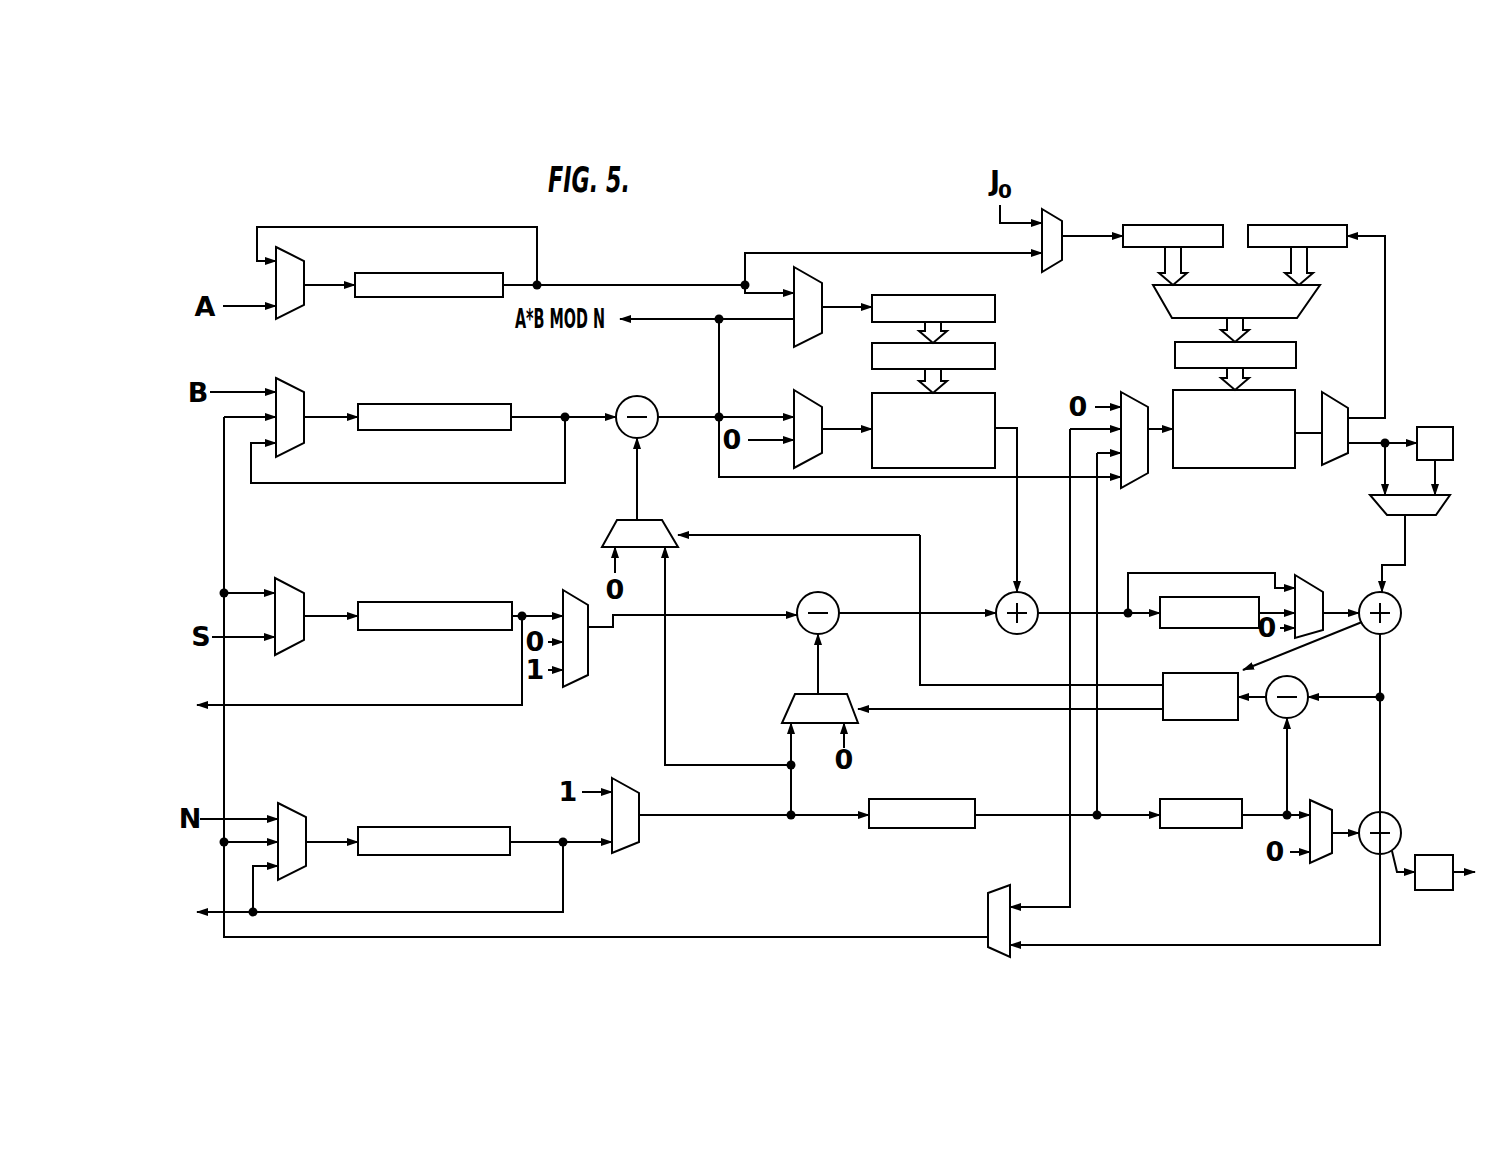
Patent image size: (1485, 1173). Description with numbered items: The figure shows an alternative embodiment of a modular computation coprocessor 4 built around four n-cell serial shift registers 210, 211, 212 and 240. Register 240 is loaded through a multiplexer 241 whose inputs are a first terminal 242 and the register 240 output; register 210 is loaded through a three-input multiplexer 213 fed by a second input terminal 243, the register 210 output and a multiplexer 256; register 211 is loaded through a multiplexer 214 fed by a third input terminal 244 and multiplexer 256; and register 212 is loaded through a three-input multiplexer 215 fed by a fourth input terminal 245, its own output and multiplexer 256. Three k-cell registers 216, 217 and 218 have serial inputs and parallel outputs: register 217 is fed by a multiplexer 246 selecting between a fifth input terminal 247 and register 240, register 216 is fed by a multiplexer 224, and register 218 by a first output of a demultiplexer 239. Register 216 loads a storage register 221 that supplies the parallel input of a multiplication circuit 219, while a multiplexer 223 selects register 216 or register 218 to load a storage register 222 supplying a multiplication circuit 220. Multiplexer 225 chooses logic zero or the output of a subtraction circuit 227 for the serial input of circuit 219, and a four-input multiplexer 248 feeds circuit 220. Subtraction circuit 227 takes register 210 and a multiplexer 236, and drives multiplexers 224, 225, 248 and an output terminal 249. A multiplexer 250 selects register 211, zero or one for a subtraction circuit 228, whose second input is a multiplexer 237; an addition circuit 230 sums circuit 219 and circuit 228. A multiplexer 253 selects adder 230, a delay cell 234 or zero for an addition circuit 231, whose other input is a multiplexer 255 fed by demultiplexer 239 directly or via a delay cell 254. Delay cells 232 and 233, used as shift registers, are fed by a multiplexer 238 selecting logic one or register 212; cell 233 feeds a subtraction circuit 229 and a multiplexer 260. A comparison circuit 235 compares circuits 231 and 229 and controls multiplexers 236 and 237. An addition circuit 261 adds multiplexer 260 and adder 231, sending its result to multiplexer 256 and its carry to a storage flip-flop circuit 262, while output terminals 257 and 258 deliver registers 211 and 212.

The coprocessor 4 is at (343, 188).
The shift register 210 is at (412, 430).
The shift register 211 is at (425, 630).
The shift register 212 is at (432, 827).
The multiplexer 213 is at (304, 445).
The multiplexer 214 is at (304, 645).
The multiplexer 215 is at (292, 803).
The k cell register 216 is at (995, 306).
The k cell register 217 is at (1190, 225).
The k cell register 218 is at (1305, 225).
The multiplication circuit 219 is at (953, 468).
The multiplication circuit 220 is at (1232, 468).
The k cell storage register 221 is at (995, 352).
The k cell storage register 222 is at (1296, 355).
The multiplexer 223 is at (1305, 312).
The multiplexer 224 is at (822, 288).
The multiplexer 225 is at (807, 394).
The subtraction circuit 227 is at (633, 396).
The subtraction circuit 228 is at (826, 595).
The subtraction circuit 229 is at (1300, 683).
The addition circuit 230 is at (1008, 631).
The addition circuit 231 is at (1400, 618).
The delay cell 232 is at (918, 799).
The delay cell 233 is at (1212, 828).
The delay cell 234 is at (1197, 628).
The comparison circuit 235 is at (1192, 720).
The multiplexer 236 is at (600, 548).
The multiplexer 237 is at (786, 706).
The multiplexer 238 is at (639, 850).
The demultiplexer 239 is at (1330, 463).
The shift register 240 is at (432, 297).
The multiplexer 241 is at (304, 305).
The first terminal 242 is at (232, 305).
The second input terminal 243 is at (233, 392).
The third input terminal 244 is at (255, 638).
The fourth input terminal 245 is at (243, 819).
The multiplexer 246 is at (1058, 268).
The fifth input terminal 247 is at (1000, 212).
The multiplexer 248 is at (1135, 398).
The output terminal 249 is at (676, 320).
The multiplexer 250 is at (580, 688).
The multiplexer 253 is at (1300, 578).
The delay cell 254 is at (1437, 427).
The multiplexer 255 is at (1437, 512).
The multiplexer 256 is at (988, 920).
The output terminal 257 is at (212, 702).
The output terminal 258 is at (212, 910).
The multiplexer 260 is at (1322, 862).
The addition circuit 261 is at (1395, 821).
The storage flip-flop circuit 262 is at (1436, 890).